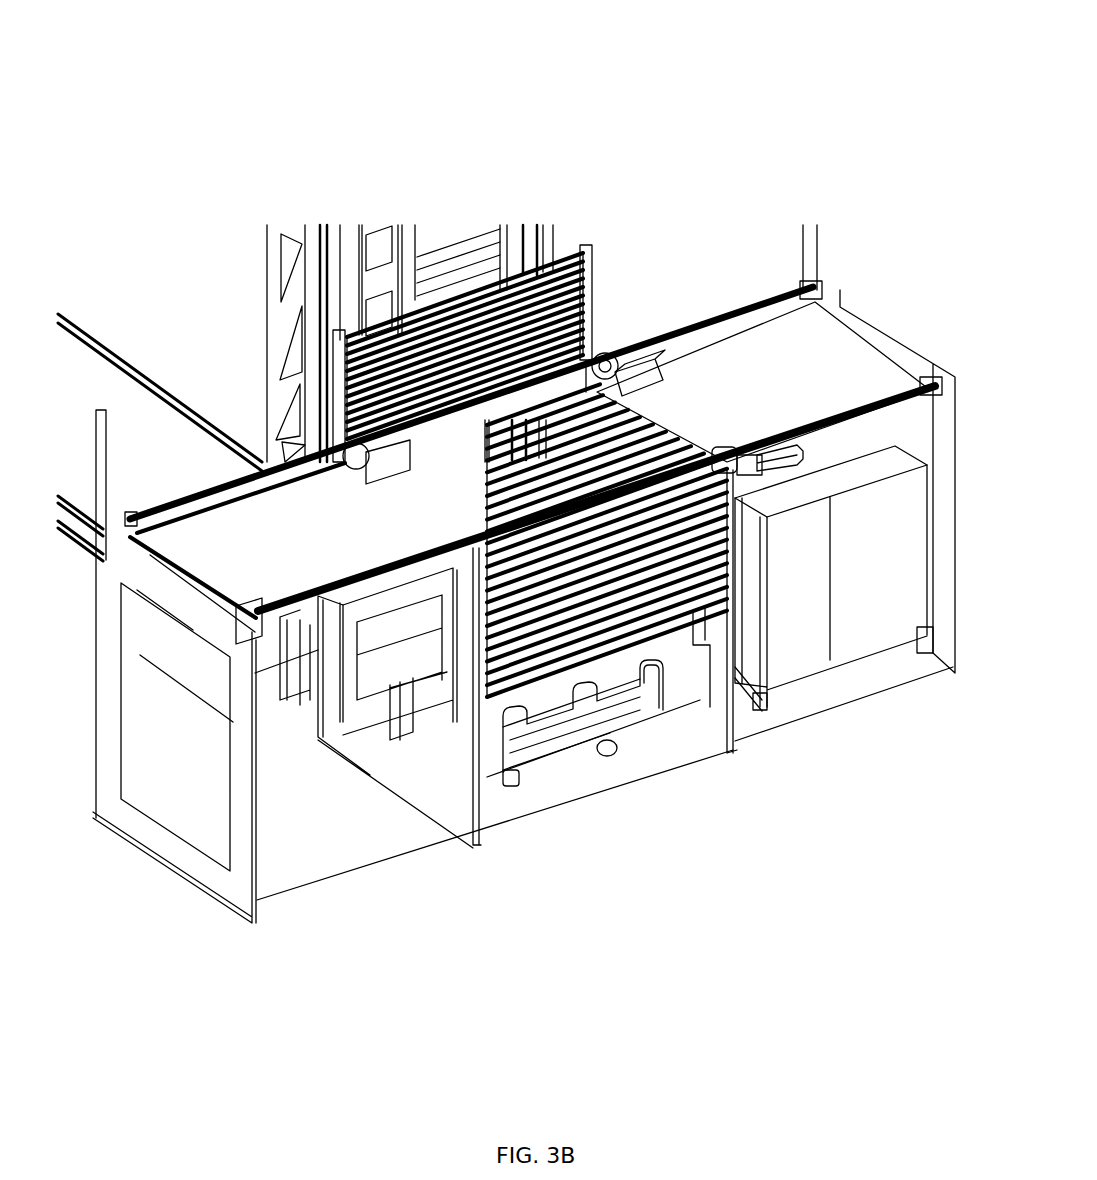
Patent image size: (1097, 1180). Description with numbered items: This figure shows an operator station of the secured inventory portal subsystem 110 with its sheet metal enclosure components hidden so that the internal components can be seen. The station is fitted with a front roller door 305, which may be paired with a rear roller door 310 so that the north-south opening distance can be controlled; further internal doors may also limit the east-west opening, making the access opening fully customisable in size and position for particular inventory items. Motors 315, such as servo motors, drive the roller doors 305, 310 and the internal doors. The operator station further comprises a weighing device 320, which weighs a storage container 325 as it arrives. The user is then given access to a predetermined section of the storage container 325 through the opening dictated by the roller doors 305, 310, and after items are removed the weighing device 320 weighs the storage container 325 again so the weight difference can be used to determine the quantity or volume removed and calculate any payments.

The secured inventory portal subsystem 110 is at (686, 252).
The front roller door 305 is at (643, 613).
The rear roller door 310 is at (480, 290).
The motors 315 is at (607, 347).
The weighing device 320 is at (537, 743).
The storage container 325 is at (425, 633).